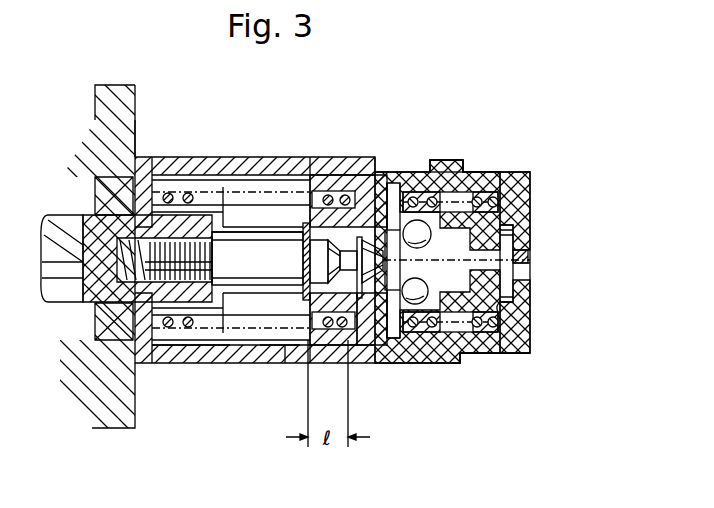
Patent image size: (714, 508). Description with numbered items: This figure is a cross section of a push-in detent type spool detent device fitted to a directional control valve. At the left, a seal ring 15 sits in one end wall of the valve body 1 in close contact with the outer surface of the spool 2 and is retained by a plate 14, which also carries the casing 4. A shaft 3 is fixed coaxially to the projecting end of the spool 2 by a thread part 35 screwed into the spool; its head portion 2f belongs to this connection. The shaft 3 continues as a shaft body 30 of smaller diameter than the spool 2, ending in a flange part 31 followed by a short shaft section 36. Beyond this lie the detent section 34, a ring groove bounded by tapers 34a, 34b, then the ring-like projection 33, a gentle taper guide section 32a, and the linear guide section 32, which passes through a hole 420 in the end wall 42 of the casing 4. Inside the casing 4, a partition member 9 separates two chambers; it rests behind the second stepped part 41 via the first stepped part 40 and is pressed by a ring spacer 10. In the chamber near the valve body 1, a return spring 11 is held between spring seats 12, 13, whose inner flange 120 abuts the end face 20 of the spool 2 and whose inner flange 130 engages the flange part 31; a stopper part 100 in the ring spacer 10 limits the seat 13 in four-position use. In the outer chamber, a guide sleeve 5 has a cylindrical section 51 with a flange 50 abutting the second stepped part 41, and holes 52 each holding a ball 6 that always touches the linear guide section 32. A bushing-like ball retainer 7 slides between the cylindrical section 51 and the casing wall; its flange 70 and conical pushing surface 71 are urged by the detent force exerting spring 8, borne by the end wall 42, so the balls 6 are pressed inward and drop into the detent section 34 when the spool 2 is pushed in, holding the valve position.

The valve body 1 is at (133, 123).
The spool 2 is at (90, 348).
The bolt head 2f is at (85, 235).
The shaft 3 is at (240, 232).
The casing 4 is at (446, 172).
The guide sleeve 5 is at (505, 185).
The ball 6 is at (468, 172).
The ball retainer 7 is at (450, 365).
The detent force exerting spring 8 is at (503, 356).
The partition member 9 is at (330, 330).
The ring spacer 10 is at (246, 352).
The return spring 11 is at (176, 178).
The spring seat 12 is at (175, 340).
The spring seat 13 is at (292, 346).
The plate 14 is at (130, 152).
The seal ring 15 is at (96, 180).
The end face 20 is at (213, 345).
The shaft body 30 is at (228, 232).
The flange part 31 is at (338, 222).
The linear guide section 32 is at (515, 228).
The taper guide section 32a is at (392, 232).
The ring-like projection 33 is at (368, 238).
The detent section 34 is at (353, 237).
The taper 34a is at (333, 242).
The taper 34b is at (374, 242).
The thread part 35 is at (95, 300).
The short shaft section 36 is at (301, 228).
The first stepped part 40 is at (392, 356).
The second stepped part 41 is at (417, 340).
The end wall 42 is at (505, 310).
The flange 50 is at (437, 162).
The cylindrical section 51 is at (474, 194).
The hole 52 is at (487, 362).
The flange 70 is at (380, 340).
The conical pushing surface 71 is at (425, 222).
The stopper part 100 is at (283, 226).
The inner flange 120 is at (197, 183).
The inner flange 130 is at (275, 343).
The hole 420 is at (528, 258).